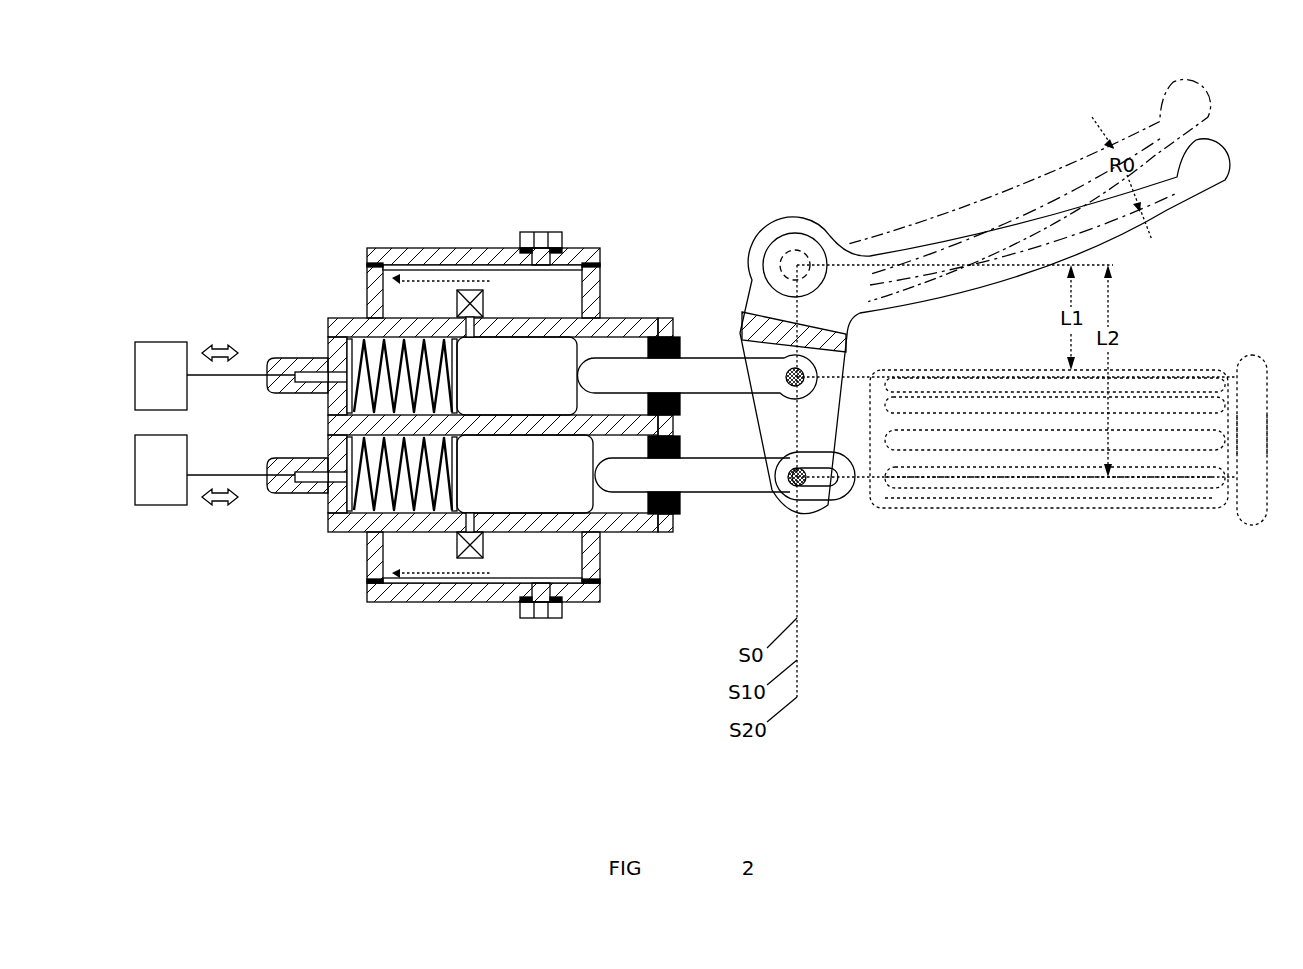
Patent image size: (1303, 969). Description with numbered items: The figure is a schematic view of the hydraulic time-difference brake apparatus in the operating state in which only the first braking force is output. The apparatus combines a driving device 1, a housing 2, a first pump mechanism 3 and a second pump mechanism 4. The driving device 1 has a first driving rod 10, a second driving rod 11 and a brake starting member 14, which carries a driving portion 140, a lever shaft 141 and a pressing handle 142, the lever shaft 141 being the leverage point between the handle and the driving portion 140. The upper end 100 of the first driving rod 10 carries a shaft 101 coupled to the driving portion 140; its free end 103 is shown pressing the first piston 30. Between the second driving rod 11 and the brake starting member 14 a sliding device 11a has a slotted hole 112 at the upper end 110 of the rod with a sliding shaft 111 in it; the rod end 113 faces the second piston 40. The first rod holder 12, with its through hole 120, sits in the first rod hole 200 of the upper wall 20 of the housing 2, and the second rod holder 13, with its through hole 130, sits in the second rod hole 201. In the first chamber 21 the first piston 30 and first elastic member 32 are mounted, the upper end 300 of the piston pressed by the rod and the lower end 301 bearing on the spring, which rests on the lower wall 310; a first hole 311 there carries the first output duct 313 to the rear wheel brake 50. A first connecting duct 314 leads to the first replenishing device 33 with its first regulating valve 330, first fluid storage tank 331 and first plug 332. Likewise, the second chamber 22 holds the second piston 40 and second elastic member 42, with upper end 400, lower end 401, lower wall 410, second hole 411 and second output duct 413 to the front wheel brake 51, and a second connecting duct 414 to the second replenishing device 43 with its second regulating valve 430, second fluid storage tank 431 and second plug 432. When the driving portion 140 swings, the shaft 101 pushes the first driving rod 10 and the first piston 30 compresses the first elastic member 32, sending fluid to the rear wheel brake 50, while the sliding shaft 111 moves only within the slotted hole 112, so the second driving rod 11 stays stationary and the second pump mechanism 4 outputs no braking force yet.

The driving device 1 is at (905, 346).
The housing 2 is at (629, 310).
The first pump mechanism 3 is at (476, 231).
The second pump mechanism 4 is at (477, 617).
The first driving rod 10 is at (698, 351).
The second driving rod 11 is at (772, 532).
The sliding device 11a is at (832, 490).
The first rod holder 12 is at (677, 330).
The second rod holder 13 is at (680, 515).
The brake starting member 14 is at (986, 295).
The upper wall 20 is at (683, 431).
The first chamber 21 is at (467, 294).
The second chamber 22 is at (479, 564).
The first piston 30 is at (505, 396).
The first elastic member 32 is at (352, 318).
The first replenishing device 33 is at (497, 258).
The second piston 40 is at (526, 496).
The second elastic member 42 is at (365, 530).
The second replenishing device 43 is at (497, 603).
The rear wheel brake 50 is at (150, 388).
The front wheel brake 51 is at (150, 481).
The upper end of first driving rod 100 is at (826, 420).
The shaft 101 is at (806, 372).
The first rod end 103 is at (580, 375).
The upper end of second driving rod 110 is at (846, 498).
The sliding shaft 111 is at (802, 500).
The slotted hole 112 is at (820, 503).
The second rod end 113 is at (597, 475).
The through hole 120 is at (688, 345).
The through hole 130 is at (690, 446).
The driving portion 140 is at (870, 422).
The lever shaft 141 is at (799, 235).
The pressing handle 142 is at (1057, 230).
The first rod hole 200 is at (667, 338).
The second rod hole 201 is at (662, 532).
The upper end of first piston 300 is at (575, 387).
The lower end of first piston 301 is at (462, 384).
The lower wall of first chamber 310 is at (333, 330).
The first hole 311 is at (310, 363).
The first output duct 313 is at (277, 358).
The first connecting duct 314 is at (483, 328).
The first regulating valve 330 is at (467, 262).
The first fluid storage tank 331 is at (392, 262).
The first plug 332 is at (540, 236).
The upper end of second piston 400 is at (592, 487).
The lower end of second piston 401 is at (480, 483).
The lower wall of second chamber 410 is at (330, 508).
The second hole 411 is at (310, 485).
The second output duct 413 is at (276, 494).
The second connecting duct 414 is at (483, 524).
The second regulating valve 430 is at (466, 583).
The second fluid storage tank 431 is at (395, 583).
The second plug 432 is at (541, 620).